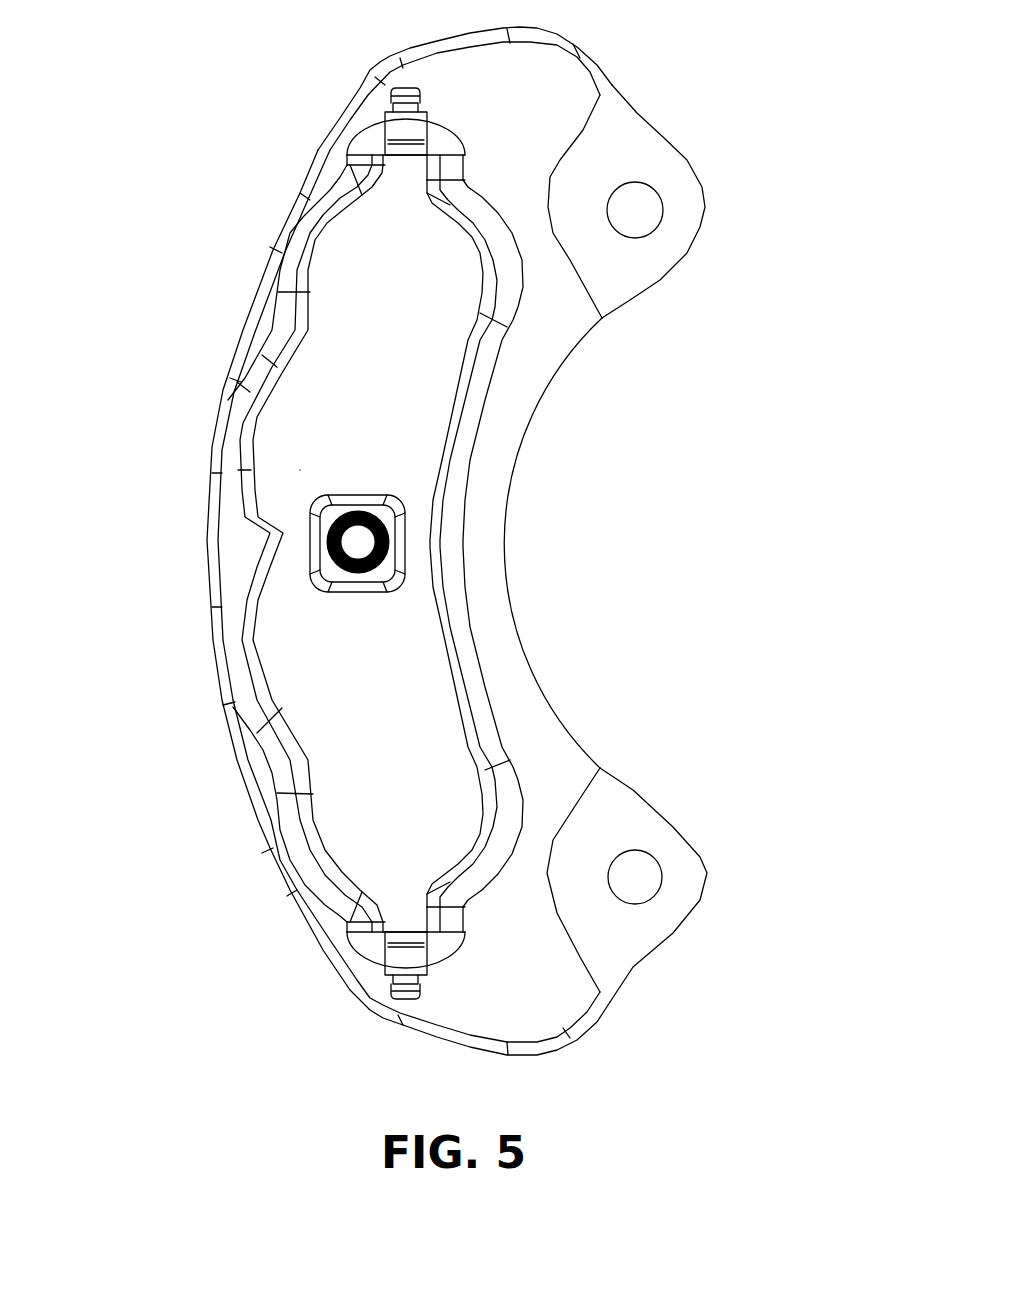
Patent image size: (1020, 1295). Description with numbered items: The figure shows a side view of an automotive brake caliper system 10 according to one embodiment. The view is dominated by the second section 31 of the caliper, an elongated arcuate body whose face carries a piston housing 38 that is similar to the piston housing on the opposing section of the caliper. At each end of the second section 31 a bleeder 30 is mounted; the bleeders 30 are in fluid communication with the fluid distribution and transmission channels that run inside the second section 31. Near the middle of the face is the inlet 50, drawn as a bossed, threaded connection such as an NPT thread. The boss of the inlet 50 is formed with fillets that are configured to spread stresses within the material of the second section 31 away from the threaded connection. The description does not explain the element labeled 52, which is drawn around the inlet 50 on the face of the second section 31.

The automotive brake caliper system 10 is at (345, 534).
The bleeder 30 is at (397, 95).
The second section 31 is at (541, 135).
The piston housing 38 is at (390, 635).
The inlet 50 is at (358, 540).
The piston seal boss 52 is at (350, 585).